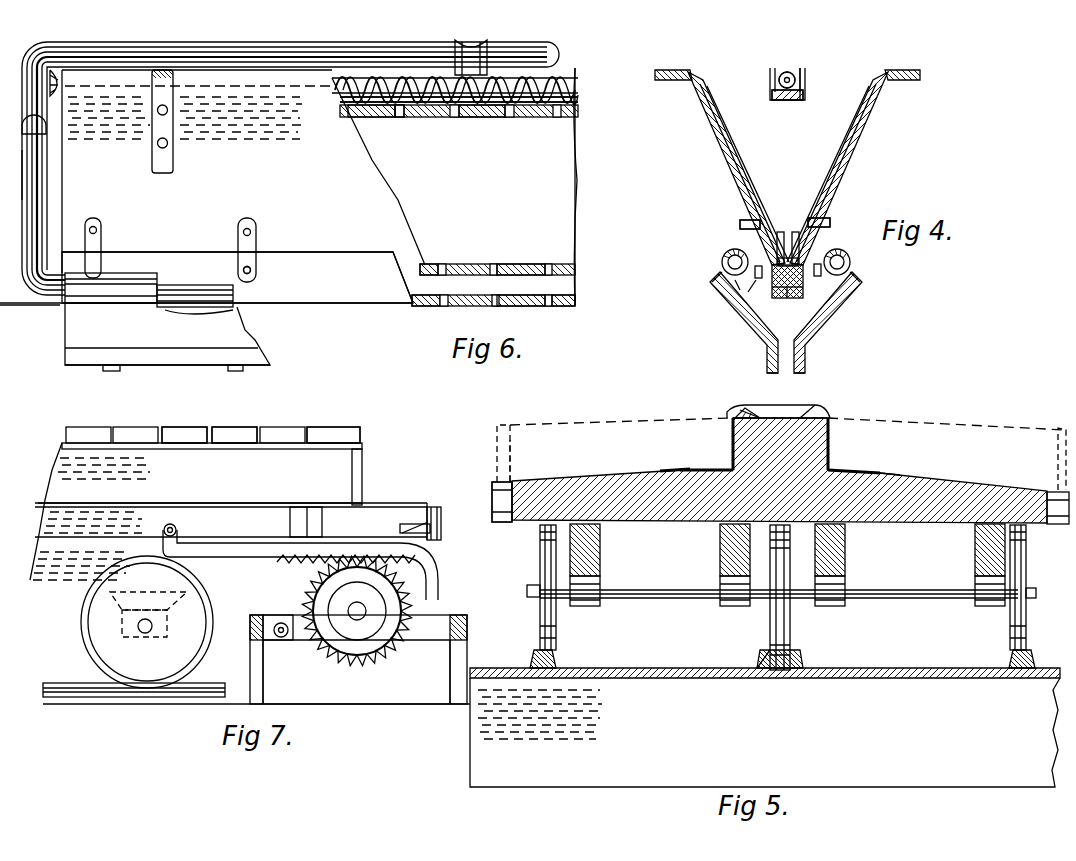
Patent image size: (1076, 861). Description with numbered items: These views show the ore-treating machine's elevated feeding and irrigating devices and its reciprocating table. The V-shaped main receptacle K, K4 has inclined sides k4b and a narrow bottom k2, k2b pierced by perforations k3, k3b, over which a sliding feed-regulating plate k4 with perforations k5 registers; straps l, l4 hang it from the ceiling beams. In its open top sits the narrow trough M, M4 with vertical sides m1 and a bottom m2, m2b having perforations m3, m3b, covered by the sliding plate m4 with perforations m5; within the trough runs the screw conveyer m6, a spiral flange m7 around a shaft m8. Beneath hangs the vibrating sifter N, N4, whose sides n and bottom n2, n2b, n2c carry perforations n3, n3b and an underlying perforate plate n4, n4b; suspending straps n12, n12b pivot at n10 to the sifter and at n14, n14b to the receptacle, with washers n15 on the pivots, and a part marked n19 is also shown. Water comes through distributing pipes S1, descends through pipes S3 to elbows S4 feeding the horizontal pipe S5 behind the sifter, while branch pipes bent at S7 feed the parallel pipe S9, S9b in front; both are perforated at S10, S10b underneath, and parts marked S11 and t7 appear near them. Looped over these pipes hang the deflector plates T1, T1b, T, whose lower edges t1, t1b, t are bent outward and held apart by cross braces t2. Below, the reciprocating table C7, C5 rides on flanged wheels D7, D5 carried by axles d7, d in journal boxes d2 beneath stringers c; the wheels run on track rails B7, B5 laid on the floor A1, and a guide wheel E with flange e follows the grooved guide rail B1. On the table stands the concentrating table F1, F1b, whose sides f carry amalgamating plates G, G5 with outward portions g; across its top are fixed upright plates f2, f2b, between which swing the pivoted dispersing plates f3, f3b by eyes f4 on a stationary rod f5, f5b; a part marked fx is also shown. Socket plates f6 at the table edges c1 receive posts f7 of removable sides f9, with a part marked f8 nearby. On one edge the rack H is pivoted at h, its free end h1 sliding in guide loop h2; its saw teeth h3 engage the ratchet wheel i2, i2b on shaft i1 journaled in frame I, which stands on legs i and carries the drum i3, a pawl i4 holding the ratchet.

In FIG. 6, the water-distributing pipe S1 is at (554, 58).
In FIG. 6, the right-angle bend of branch pipe S7 is at (22, 128).
In FIG. 6, the downwardly-extended pipe S3 is at (22, 192).
In FIG. 6, the elbow S4 is at (206, 289).
In FIG. 6, the part t7 is at (16, 306).
In FIG. 6, the strap l is at (173, 126).
In FIG. 6, the trough M is at (455, 112).
In FIG. 6, the screw conveyer m6 is at (555, 86).
In FIG. 6, the conveyer shaft m8 is at (580, 92).
In FIG. 6, the spiral flange m7 is at (580, 99).
In FIG. 6, the perforation in trough bottom m3 is at (553, 117).
In FIG. 6, the trough bottom m2 is at (372, 117).
In FIG. 6, the feed-regulating sliding plate m4 is at (400, 117).
In FIG. 6, the perforation in sliding plate m5 is at (455, 117).
In FIG. 6, the main receptacle K is at (575, 188).
In FIG. 6, the feed-regulating plate k4 is at (466, 264).
In FIG. 6, the perforation in feed-regulating plate k5 is at (432, 264).
In FIG. 6, the perforation in receptacle bottom k3 is at (426, 290).
In FIG. 6, the perforation in sifter bottom n3 is at (498, 295).
In FIG. 6, the receptacle bottom k2 is at (521, 277).
In FIG. 6, the perforate feed-regulating plate n4 is at (575, 298).
In FIG. 6, the sifter bottom n2 is at (522, 306).
In FIG. 6, the vibrating trough N is at (355, 298).
In FIG. 6, the upper strap pivot n14 is at (101, 230).
In FIG. 6, the suspending strap n12 is at (101, 243).
In FIG. 6, the lower strap pivot n10 is at (256, 274).
In FIG. 6, the forward horizontal pipe S9 is at (125, 280).
In FIG. 6, the pipe perforation S10 is at (225, 310).
In FIG. 6, the material-deflector T1 is at (167, 334).
In FIG. 6, the cross-brace t2 is at (118, 372).
In FIG. 6, the lower edge of deflector t1 is at (205, 360).
In FIG. 4, the main receptacle K4 is at (876, 112).
In FIG. 4, the strap l4 is at (714, 188).
In FIG. 4, the receptacle side k4b is at (836, 162).
In FIG. 4, the sifter side n is at (794, 281).
In FIG. 4, the trough M4 is at (806, 84).
In FIG. 4, the trough side m1 is at (770, 82).
In FIG. 4, the perforation in trough bottom m3b is at (785, 101).
In FIG. 4, the trough bottom m2b is at (801, 101).
In FIG. 4, the washer n15 is at (765, 222).
In FIG. 4, the upper strap pivot n14b is at (740, 226).
In FIG. 4, the bolt n19 is at (836, 226).
In FIG. 4, the suspending strap n12b is at (752, 240).
In FIG. 4, the receptacle bottom k2b is at (778, 247).
In FIG. 4, the perforation in receptacle bottom k3b is at (800, 246).
In FIG. 4, the perforate feed-regulating plate n4b is at (787, 275).
In FIG. 4, the perforation in sifter bottom n3b is at (782, 299).
In FIG. 4, the sifter bottom n2b is at (790, 299).
In FIG. 4, the rear horizontal pipe S5 is at (722, 258).
In FIG. 4, the forward horizontal pipe S9b is at (850, 270).
In FIG. 4, the spring arm S11 is at (722, 278).
In FIG. 4, the pipe perforation S10b is at (840, 280).
In FIG. 4, the sifter bottom n2c is at (732, 290).
In FIG. 4, the vibrating trough N4 is at (755, 290).
In FIG. 4, the material-deflector T1b is at (752, 330).
In FIG. 4, the material-deflector T is at (828, 322).
In FIG. 4, the lower edge of deflector t1b is at (765, 362).
In FIG. 4, the lower edge of deflector t is at (805, 357).
In FIG. 7, the concentrating-table F1 is at (276, 430).
In FIG. 7, the material-dispersing pivoted plate f3 is at (180, 428).
In FIG. 7, the upright plate f2 is at (216, 428).
In FIG. 7, the stationary rod f5 is at (360, 446).
In FIG. 7, the amalgamating-plate G is at (196, 511).
In FIG. 7, the reciprocating table C7 is at (363, 505).
In FIG. 7, the rack H is at (238, 545).
In FIG. 7, the guide-loop h2 is at (421, 524).
In FIG. 7, the rack pivot h is at (170, 524).
In FIG. 7, the vibrating end of rack h1 is at (408, 528).
In FIG. 7, the rack teeth h3 is at (300, 560).
In FIG. 7, the ratchet-wheel i2 is at (410, 612).
In FIG. 7, the drum i3 is at (352, 628).
In FIG. 7, the shaft i1 is at (360, 614).
In FIG. 7, the flanged wheel D7 is at (210, 626).
In FIG. 7, the axle d7 is at (146, 633).
In FIG. 7, the track-rail B7 is at (66, 683).
In FIG. 7, the shaft-supporting frame I is at (447, 648).
In FIG. 7, the pawl i4 is at (278, 637).
In FIG. 7, the frame leg i is at (264, 682).
In FIG. 5, the reciprocating table C5 is at (580, 479).
In FIG. 5, the concentrating-table side f is at (733, 446).
In FIG. 5, the outward portion of amalgamating-plate g is at (682, 470).
In FIG. 5, the plate fx is at (672, 470).
In FIG. 5, the stationary rod f5b is at (890, 475).
In FIG. 5, the amalgamating-plate G5 is at (733, 428).
In FIG. 5, the concentrating-table F1b is at (832, 404).
In FIG. 5, the material-dispersing pivoted plate f3b is at (775, 408).
In FIG. 5, the eye f4 is at (745, 410).
In FIG. 5, the socket-plate f6 is at (492, 490).
In FIG. 5, the upright plate f2b is at (808, 410).
In FIG. 5, the table edge c1 is at (492, 507).
In FIG. 5, the post f7 is at (497, 448).
In FIG. 5, the guide f8 is at (512, 458).
In FIG. 5, the removable side f9 is at (552, 422).
In FIG. 5, the stringer c is at (600, 547).
In FIG. 5, the journal-box d2 is at (588, 600).
In FIG. 5, the axle d is at (658, 594).
In FIG. 5, the flanged wheel D5 is at (1010, 634).
In FIG. 5, the guide-wheel E is at (790, 620).
In FIG. 5, the annular flange e is at (792, 655).
In FIG. 5, the ratchet-wheel i2b is at (764, 662).
In FIG. 5, the track-rail B5 is at (545, 664).
In FIG. 5, the guide-rail B1 is at (765, 689).
In FIG. 5, the floor A1 is at (765, 732).